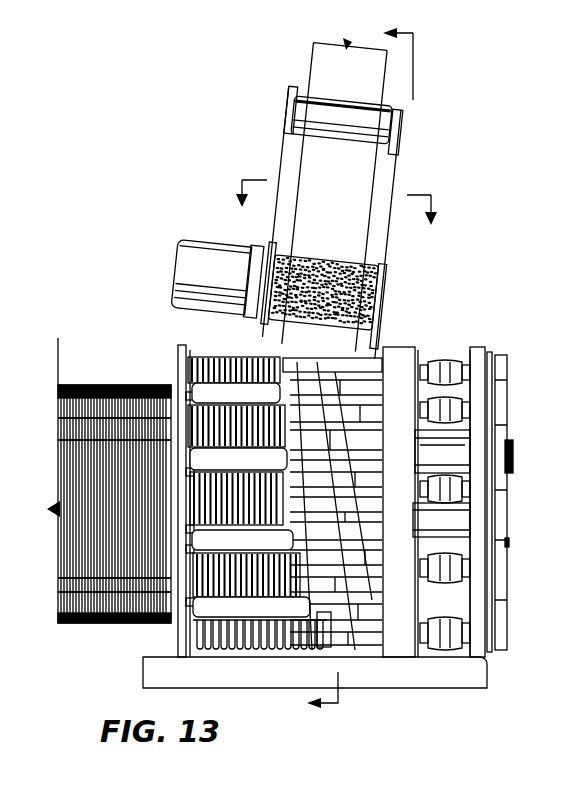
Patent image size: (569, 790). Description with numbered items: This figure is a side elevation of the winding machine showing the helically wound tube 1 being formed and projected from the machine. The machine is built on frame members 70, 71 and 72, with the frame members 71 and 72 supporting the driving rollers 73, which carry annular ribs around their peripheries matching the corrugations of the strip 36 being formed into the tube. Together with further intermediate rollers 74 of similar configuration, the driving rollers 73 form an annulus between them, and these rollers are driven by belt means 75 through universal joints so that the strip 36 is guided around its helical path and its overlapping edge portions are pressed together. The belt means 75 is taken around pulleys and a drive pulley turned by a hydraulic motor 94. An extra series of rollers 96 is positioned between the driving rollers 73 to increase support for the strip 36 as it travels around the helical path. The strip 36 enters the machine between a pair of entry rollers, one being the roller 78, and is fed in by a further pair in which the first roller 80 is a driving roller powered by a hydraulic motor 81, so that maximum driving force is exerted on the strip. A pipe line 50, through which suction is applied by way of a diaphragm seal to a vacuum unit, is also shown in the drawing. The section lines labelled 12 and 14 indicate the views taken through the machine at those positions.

The helically wound tube 1 is at (93, 383).
The section line 12 is at (382, 383).
The section line 14 is at (339, 188).
The strip 36 is at (340, 60).
The pipe line 50 is at (512, 540).
The frame member 70 is at (477, 347).
The frame member 71 is at (180, 348).
The frame member 72 is at (392, 352).
The driving rollers 73 is at (205, 358).
The intermediate rollers 74 is at (180, 403).
The belt means 75 is at (497, 527).
The roller 78 is at (318, 108).
The driving roller 80 is at (350, 277).
The hydraulic motor 81 is at (195, 262).
The hydraulic motor 94 is at (447, 455).
The extra series of rollers 96 is at (282, 605).